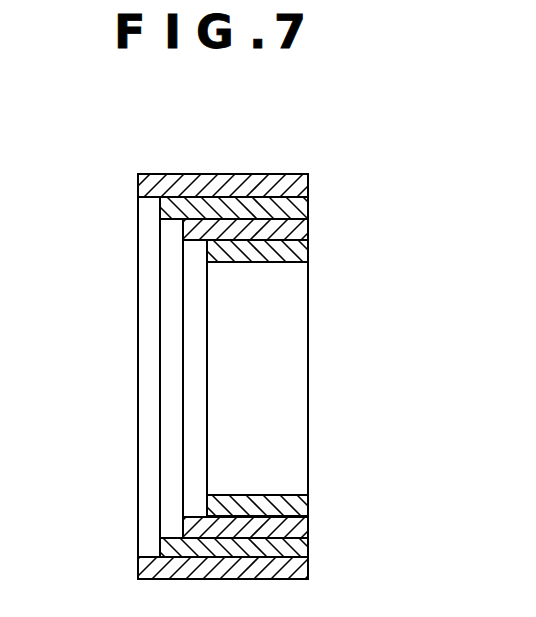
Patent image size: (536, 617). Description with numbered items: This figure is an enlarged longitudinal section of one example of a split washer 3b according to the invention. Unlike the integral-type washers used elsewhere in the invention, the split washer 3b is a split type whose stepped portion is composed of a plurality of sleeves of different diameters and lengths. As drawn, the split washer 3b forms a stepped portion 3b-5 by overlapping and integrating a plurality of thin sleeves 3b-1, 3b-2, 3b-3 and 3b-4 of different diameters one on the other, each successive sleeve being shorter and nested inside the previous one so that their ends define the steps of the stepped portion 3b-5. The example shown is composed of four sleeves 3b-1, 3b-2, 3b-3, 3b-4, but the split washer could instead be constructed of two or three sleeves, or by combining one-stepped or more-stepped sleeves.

The split washer 3b is at (225, 349).
The thin sleeve 3b-1 is at (303, 183).
The thin sleeve 3b-2 is at (292, 209).
The thin sleeve 3b-3 is at (284, 234).
The thin sleeve 3b-4 is at (293, 250).
The stepped portion 3b-5 is at (153, 253).